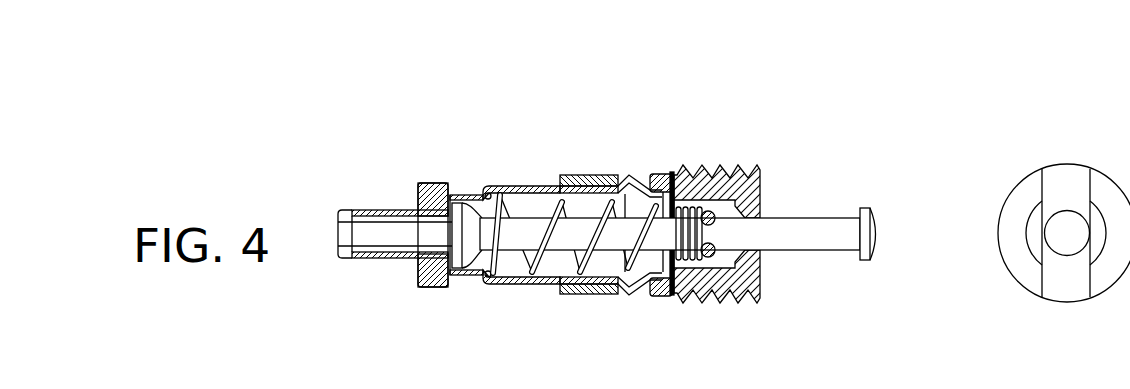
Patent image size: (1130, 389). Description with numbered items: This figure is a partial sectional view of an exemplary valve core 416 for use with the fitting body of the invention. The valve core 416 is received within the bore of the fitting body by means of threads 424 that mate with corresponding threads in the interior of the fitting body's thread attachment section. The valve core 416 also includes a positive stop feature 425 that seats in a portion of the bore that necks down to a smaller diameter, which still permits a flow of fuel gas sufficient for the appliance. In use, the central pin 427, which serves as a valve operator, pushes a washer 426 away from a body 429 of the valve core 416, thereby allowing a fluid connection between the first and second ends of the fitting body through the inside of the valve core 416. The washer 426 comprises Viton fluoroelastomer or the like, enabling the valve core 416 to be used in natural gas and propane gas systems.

The valve core 416 is at (845, 95).
The threads 424 is at (735, 305).
The positive stop feature 425 is at (622, 175).
The washer 426 is at (433, 190).
The central pin 427 is at (878, 234).
The body 429 is at (465, 197).